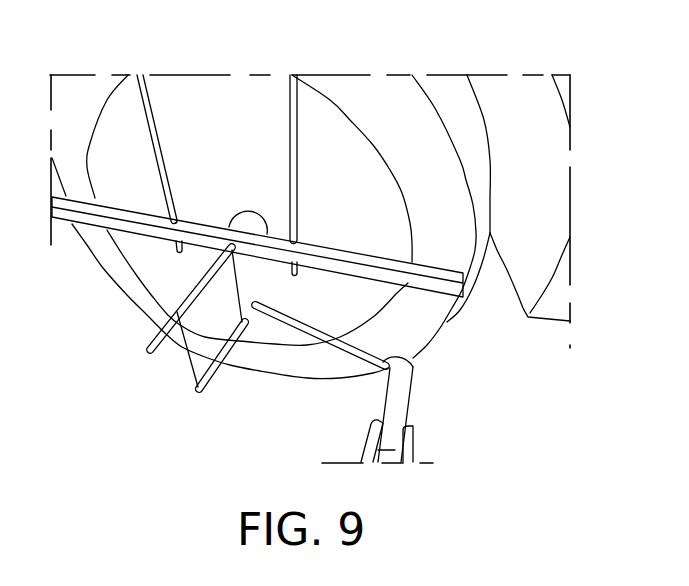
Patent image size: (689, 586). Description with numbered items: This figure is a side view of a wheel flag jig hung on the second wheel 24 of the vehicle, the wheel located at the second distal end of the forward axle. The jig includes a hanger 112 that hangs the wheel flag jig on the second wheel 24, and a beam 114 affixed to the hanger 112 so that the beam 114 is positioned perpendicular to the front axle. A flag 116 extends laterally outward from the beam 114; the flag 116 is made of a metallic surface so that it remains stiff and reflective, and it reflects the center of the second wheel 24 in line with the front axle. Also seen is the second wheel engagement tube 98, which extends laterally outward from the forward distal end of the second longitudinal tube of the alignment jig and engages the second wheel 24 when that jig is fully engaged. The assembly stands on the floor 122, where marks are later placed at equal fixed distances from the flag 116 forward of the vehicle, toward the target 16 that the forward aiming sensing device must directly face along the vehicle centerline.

The target 16 is at (518, 177).
The second wheel 24 is at (292, 355).
The second wheel engagement tube 98 is at (388, 420).
The hanger 112 is at (153, 92).
The beam 114 is at (64, 213).
The flag 116 is at (200, 347).
The floor 122 is at (510, 390).